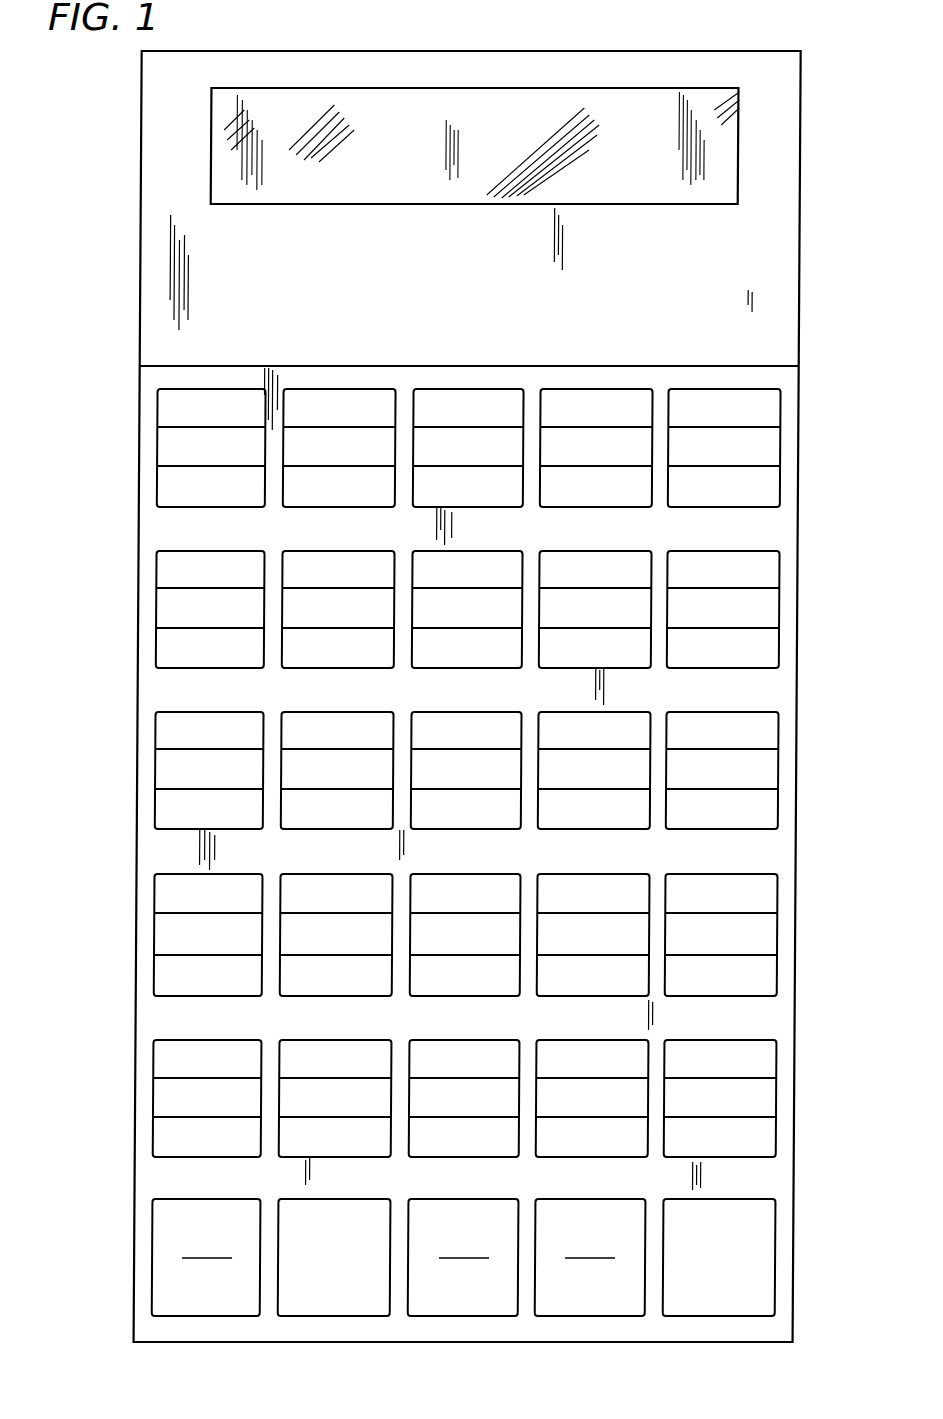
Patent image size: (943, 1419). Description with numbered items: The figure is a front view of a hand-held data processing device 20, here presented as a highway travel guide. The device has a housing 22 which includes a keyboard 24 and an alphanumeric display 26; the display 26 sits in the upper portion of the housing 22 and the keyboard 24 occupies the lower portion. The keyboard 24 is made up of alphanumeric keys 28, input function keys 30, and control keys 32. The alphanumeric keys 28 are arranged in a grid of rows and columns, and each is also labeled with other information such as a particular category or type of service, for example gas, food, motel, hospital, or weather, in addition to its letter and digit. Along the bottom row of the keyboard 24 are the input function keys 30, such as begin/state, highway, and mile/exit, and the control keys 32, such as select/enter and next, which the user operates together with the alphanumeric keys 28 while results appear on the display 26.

The data processing device 20 is at (820, 938).
The housing 22 is at (800, 524).
The keyboard 24 is at (155, 817).
The alphanumeric display 26 is at (222, 146).
The alphanumeric keys 28 is at (413, 772).
The input function keys 30 is at (415, 1308).
The control keys 32 is at (627, 1308).